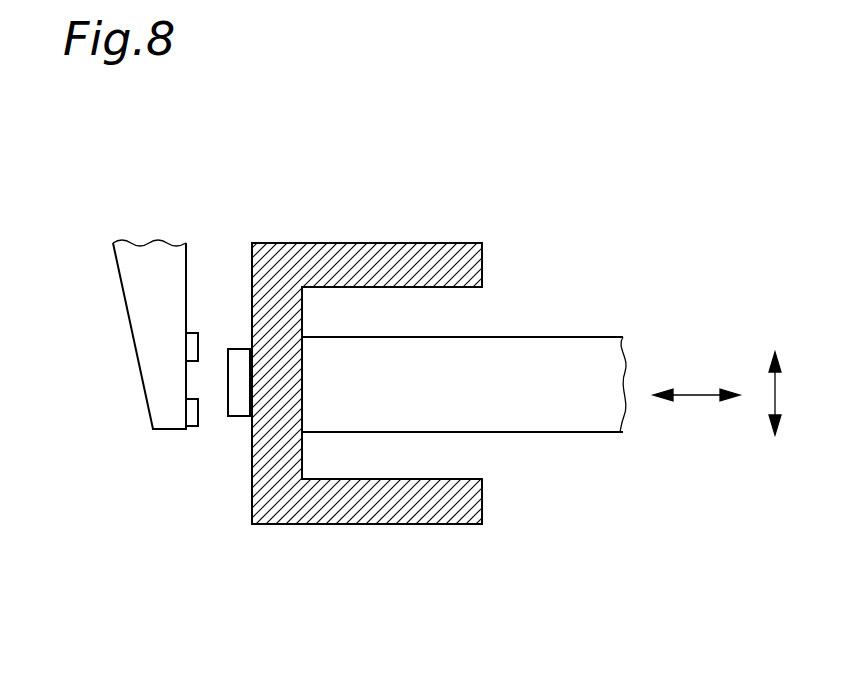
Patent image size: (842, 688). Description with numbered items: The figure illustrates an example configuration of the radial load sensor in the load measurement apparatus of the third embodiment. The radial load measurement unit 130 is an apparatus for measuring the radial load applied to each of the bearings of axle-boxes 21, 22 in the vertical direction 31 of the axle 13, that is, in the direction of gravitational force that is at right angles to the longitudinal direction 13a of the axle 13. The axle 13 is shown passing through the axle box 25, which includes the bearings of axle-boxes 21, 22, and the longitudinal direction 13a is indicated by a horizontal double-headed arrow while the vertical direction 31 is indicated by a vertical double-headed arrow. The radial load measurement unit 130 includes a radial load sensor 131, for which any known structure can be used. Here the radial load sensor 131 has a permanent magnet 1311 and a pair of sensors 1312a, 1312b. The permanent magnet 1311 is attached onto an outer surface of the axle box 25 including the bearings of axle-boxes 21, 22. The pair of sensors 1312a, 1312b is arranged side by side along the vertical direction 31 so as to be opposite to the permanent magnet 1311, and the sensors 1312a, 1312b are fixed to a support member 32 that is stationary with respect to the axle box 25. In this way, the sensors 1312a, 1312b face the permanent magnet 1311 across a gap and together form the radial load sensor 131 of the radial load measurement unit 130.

The radial load measurement unit 130 is at (214, 182).
The axle box 25 is at (410, 232).
The bearing of axle-box 21 is at (468, 310).
The bearing of axle-box 22 is at (392, 383).
The axle 13 is at (580, 338).
The longitudinal direction 13a is at (693, 396).
The vertical direction 31 is at (776, 392).
The support member 32 is at (133, 295).
The radial load sensor 131 is at (305, 606).
The permanent magnet 1311 is at (237, 408).
The sensor 1312a is at (190, 347).
The sensor 1312b is at (190, 412).